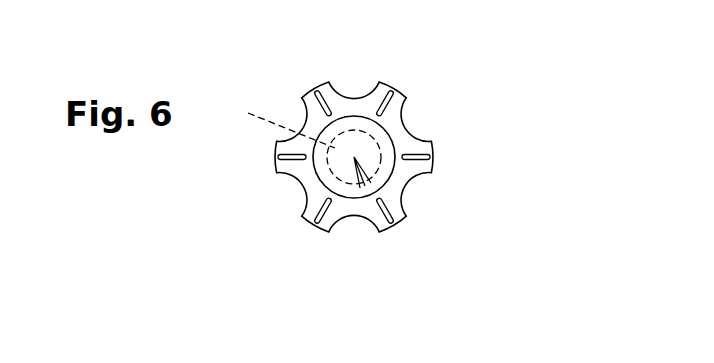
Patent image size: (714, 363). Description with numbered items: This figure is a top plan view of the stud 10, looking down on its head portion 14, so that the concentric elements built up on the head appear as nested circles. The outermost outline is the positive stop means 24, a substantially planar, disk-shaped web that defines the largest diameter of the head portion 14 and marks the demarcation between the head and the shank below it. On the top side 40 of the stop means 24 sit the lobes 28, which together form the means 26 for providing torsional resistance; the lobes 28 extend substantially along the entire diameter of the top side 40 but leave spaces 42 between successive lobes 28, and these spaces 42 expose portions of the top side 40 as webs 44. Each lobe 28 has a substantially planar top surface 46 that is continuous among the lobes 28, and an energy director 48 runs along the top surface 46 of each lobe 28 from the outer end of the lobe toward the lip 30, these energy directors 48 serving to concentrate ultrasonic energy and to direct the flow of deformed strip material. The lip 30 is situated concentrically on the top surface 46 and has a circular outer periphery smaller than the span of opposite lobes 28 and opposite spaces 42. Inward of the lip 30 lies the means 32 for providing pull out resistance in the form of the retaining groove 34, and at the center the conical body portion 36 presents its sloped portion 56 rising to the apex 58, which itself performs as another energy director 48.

The stud 10 is at (236, 248).
The head portion 14 is at (456, 117).
The positive stop means 24 is at (442, 190).
The means for providing torsional resistance 26 is at (305, 76).
The lobes 28 is at (374, 96).
The lip 30 is at (356, 199).
The means for providing pull out resistance 32 is at (434, 156).
The retaining groove 34 is at (278, 123).
The body portion 36 is at (421, 198).
The top side 40 is at (306, 214).
The spaces 42 is at (346, 97).
The webs 44 is at (408, 141).
The top surface 46 is at (392, 100).
The energy directors 48 is at (387, 92).
The sloped portion 56 is at (329, 152).
The apex 58 is at (358, 144).